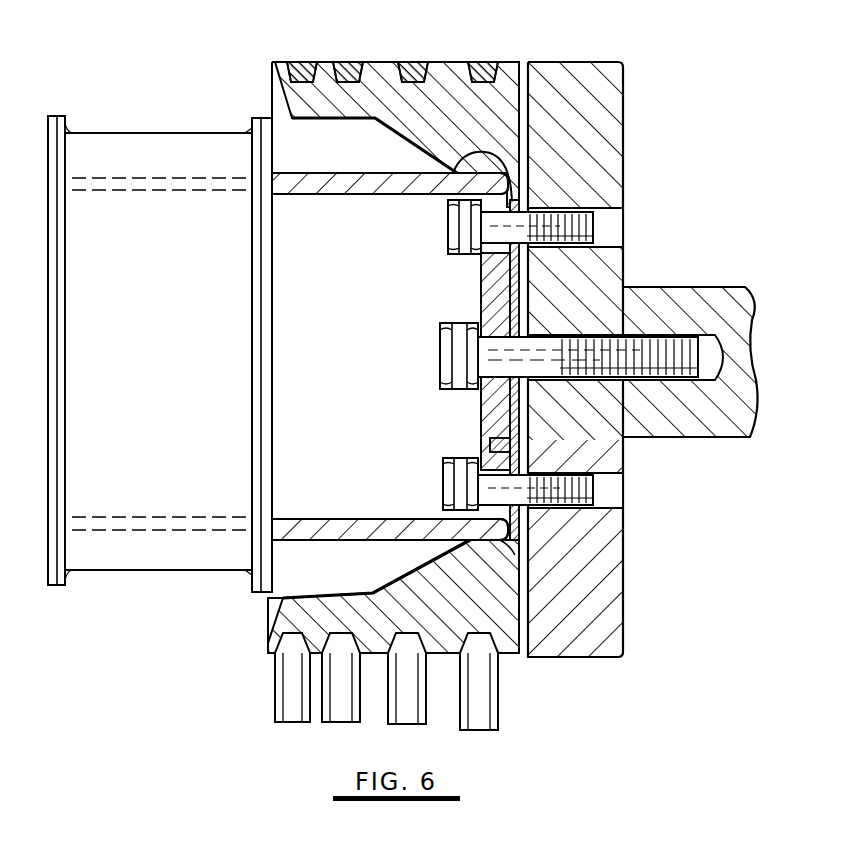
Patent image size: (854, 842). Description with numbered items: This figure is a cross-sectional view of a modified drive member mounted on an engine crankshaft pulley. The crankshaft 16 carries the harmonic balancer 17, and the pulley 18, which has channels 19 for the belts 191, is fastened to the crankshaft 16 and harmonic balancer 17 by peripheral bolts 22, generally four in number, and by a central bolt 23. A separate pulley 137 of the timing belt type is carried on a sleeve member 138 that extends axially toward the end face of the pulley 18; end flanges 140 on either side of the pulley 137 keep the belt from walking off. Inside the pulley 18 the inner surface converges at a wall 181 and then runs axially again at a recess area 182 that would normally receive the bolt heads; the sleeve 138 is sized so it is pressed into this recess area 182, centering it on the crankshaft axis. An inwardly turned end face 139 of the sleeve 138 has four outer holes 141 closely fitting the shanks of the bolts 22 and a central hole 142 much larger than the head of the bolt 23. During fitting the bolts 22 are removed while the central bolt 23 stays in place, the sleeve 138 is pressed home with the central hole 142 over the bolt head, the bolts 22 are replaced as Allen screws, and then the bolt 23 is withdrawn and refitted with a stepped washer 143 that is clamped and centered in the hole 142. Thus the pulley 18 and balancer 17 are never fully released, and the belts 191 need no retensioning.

The crankshaft 16 is at (670, 438).
The harmonic balancer 17 is at (605, 127).
The pulley 18 is at (508, 74).
The channels 19 is at (366, 68).
The bolts 22 is at (592, 228).
The central bolt 23 is at (664, 318).
The pulley 137 is at (155, 122).
The sleeve member 138 is at (350, 519).
The end face 139 is at (492, 258).
The end flanges 140 is at (60, 570).
The outer holes 141 is at (455, 172).
The central hole 142 is at (481, 452).
The washer 143 is at (498, 405).
The wall 181 is at (398, 582).
The recess area 182 is at (472, 540).
The belts 191 is at (304, 60).